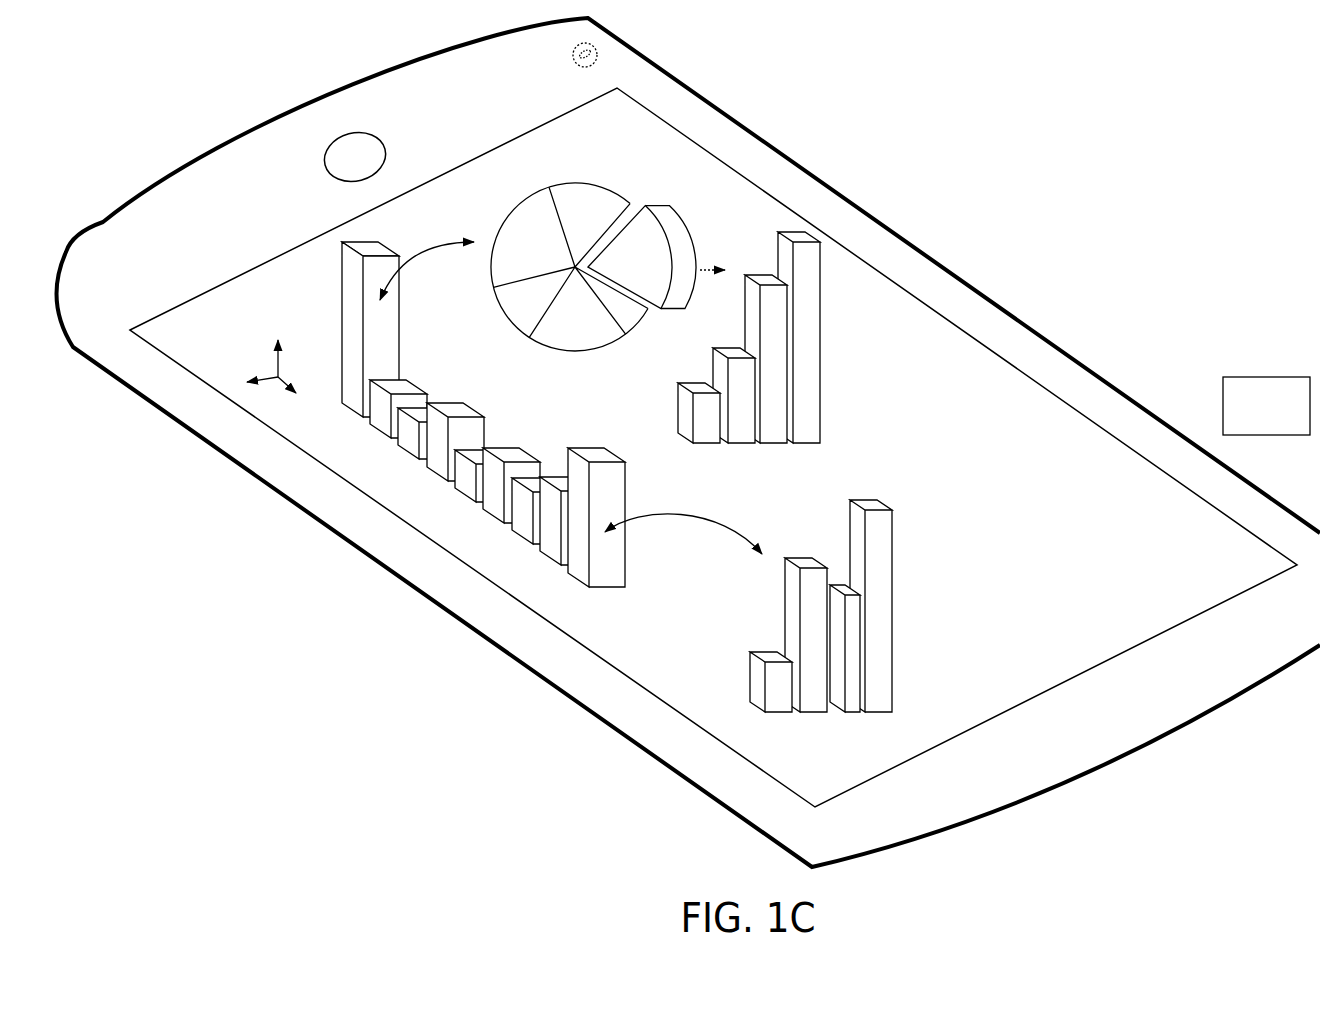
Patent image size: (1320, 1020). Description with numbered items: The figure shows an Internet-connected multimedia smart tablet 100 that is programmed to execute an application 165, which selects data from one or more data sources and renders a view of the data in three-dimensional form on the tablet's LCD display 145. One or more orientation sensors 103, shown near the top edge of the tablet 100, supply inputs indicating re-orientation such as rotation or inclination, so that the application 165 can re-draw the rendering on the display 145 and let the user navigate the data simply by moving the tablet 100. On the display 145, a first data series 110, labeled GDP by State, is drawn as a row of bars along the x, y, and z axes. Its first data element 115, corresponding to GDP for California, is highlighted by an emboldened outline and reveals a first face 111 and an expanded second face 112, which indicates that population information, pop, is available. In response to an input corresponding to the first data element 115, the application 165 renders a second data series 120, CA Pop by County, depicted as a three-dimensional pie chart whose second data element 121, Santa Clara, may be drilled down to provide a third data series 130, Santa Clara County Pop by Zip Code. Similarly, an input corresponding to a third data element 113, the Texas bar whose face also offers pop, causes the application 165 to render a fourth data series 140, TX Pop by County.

The Internet-connected multimedia smart tablet 100 is at (948, 829).
The orientation sensor 103 is at (582, 66).
The first data series 110 is at (459, 430).
The first face 111 is at (367, 345).
The second face 112 is at (391, 332).
The third data element 113 is at (617, 572).
The first data element 115 is at (342, 271).
The second data series 120 is at (615, 256).
The second data element 121 is at (672, 207).
The third data series 130 is at (850, 346).
The fourth data series 140 is at (920, 595).
The display 145 is at (713, 447).
The application 165 is at (1235, 470).